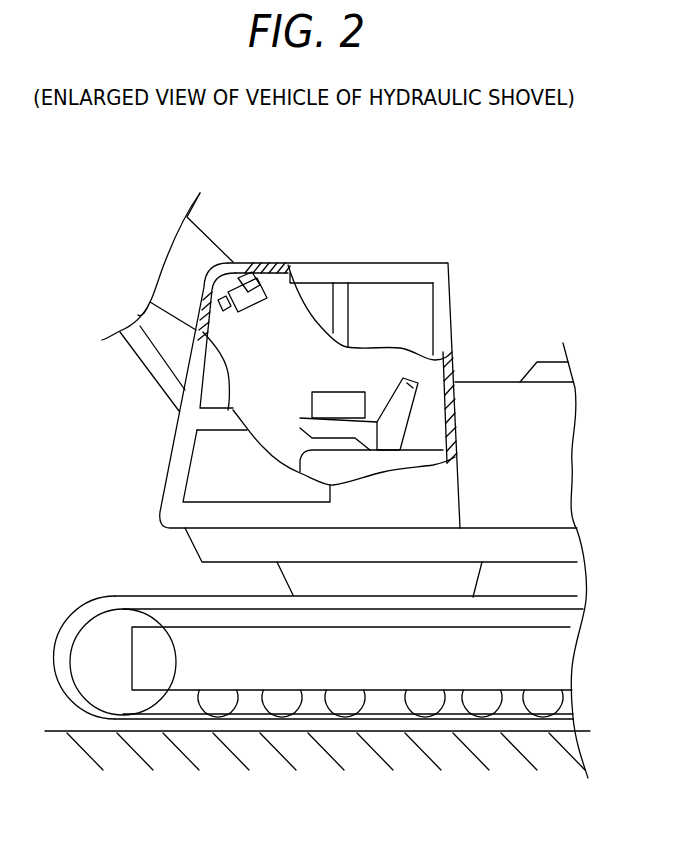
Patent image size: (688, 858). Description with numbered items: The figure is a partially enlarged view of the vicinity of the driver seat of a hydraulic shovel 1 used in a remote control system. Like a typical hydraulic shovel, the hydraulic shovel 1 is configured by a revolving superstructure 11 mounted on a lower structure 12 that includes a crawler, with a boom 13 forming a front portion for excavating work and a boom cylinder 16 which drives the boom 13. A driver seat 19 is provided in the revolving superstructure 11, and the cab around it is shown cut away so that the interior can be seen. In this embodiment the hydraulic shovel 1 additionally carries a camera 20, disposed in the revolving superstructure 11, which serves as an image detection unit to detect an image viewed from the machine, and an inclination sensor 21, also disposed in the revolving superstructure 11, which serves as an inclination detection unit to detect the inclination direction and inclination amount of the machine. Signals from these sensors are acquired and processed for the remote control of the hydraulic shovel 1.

The hydraulic shovel 1 is at (508, 200).
The revolving superstructure 11 is at (500, 382).
The lower structure 12 is at (80, 610).
The boom 13 is at (207, 242).
The boom cylinder 16 is at (128, 352).
The driver seat 19 is at (407, 383).
The camera 20 is at (272, 280).
The inclination sensor 21 is at (311, 400).